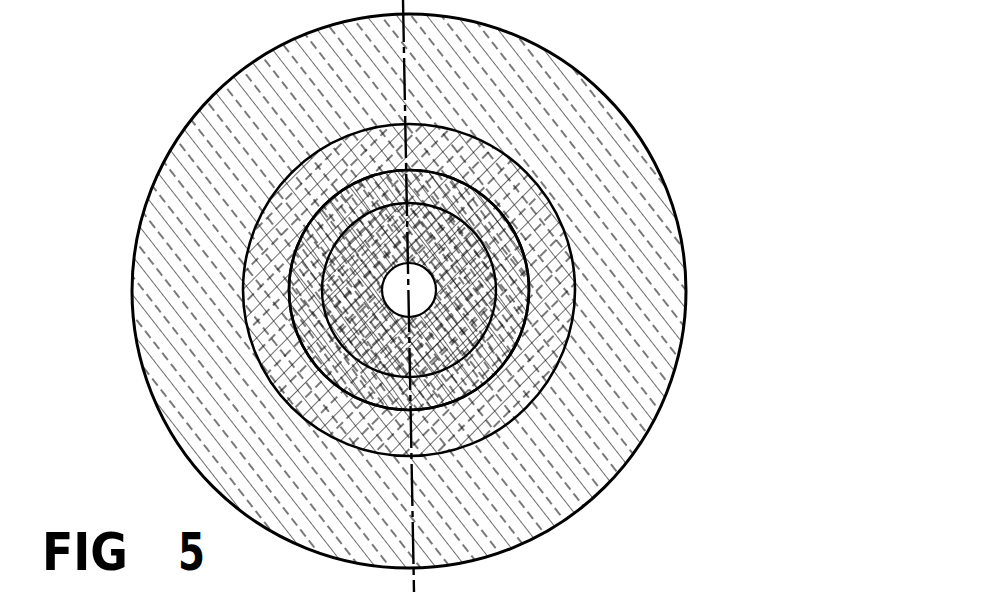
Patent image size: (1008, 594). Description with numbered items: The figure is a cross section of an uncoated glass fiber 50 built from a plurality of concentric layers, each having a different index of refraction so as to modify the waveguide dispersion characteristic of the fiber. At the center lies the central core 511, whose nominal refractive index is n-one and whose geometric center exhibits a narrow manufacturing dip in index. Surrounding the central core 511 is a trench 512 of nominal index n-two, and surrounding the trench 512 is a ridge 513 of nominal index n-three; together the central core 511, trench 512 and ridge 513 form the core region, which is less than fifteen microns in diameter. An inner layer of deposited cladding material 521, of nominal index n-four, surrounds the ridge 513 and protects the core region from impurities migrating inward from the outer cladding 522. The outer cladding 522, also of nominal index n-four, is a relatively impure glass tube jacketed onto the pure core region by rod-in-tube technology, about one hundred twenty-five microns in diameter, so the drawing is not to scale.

The uncoated glass fiber 50 is at (426, 296).
The central core 511 is at (355, 293).
The trench 512 is at (302, 246).
The ridge 513 is at (289, 298).
The inner layer of deposited cladding material 521 is at (268, 343).
The outer cladding 522 is at (217, 387).